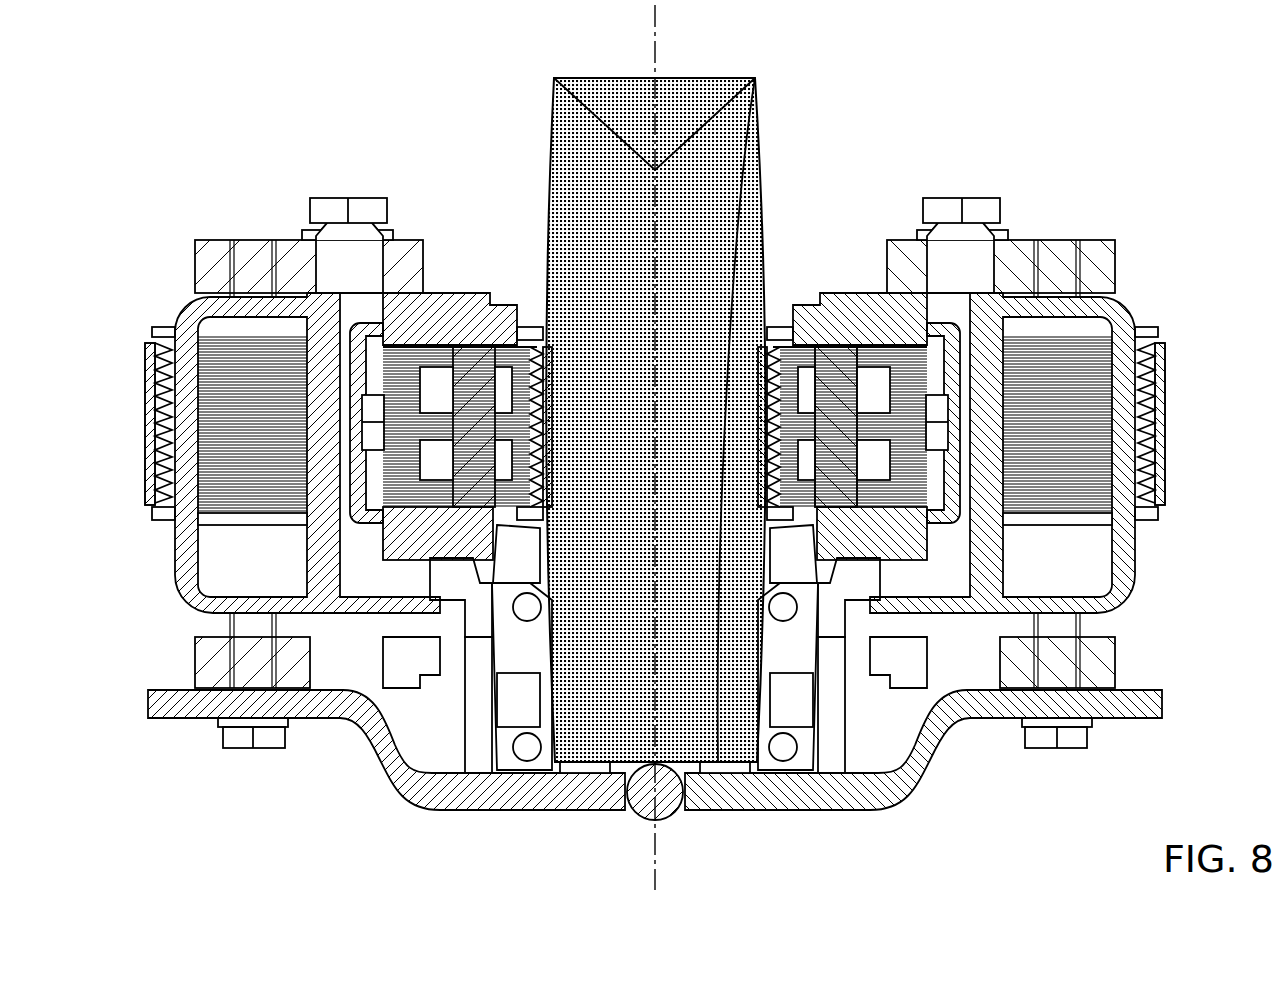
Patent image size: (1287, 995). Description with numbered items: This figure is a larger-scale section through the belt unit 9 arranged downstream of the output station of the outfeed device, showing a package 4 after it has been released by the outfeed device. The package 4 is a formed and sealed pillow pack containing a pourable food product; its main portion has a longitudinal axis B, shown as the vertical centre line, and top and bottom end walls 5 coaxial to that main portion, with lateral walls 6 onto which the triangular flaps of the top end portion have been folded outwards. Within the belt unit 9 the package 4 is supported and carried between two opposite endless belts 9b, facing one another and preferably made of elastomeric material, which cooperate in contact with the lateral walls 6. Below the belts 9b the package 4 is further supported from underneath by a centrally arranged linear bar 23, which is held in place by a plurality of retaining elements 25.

The longitudinal axis B is at (655, 33).
The package 4 is at (754, 212).
The end wall 5 is at (722, 72).
The lateral wall 6 is at (698, 258).
The belt unit 9 is at (1192, 386).
The endless belt 9b is at (1170, 445).
The linear bar 23 is at (670, 808).
The retaining element 25 is at (416, 796).